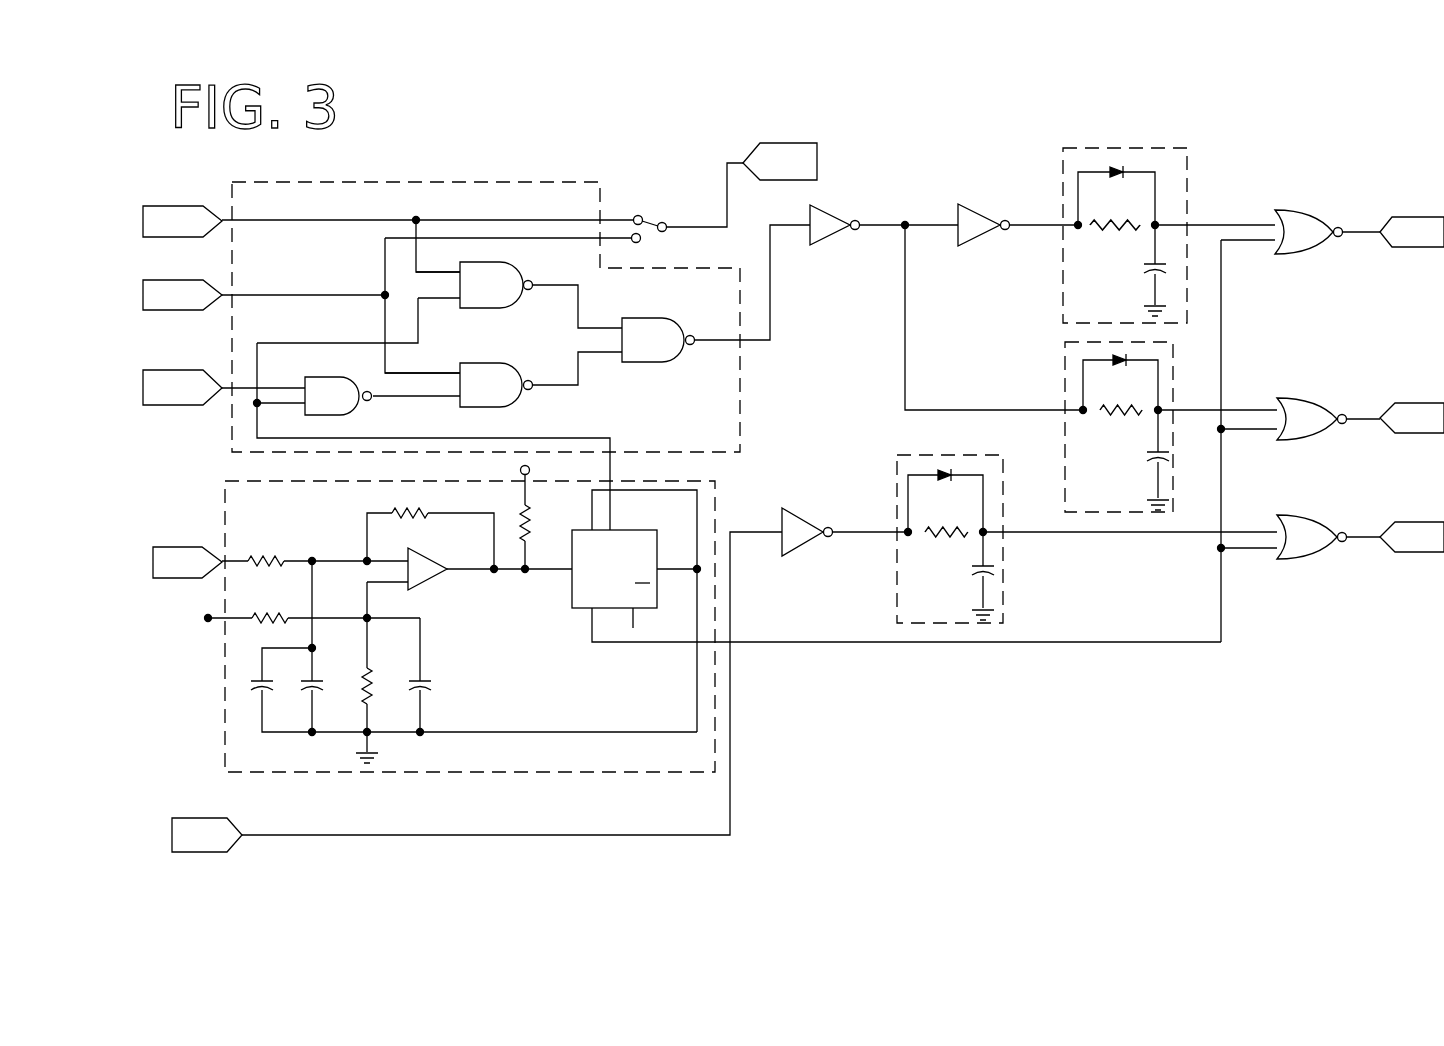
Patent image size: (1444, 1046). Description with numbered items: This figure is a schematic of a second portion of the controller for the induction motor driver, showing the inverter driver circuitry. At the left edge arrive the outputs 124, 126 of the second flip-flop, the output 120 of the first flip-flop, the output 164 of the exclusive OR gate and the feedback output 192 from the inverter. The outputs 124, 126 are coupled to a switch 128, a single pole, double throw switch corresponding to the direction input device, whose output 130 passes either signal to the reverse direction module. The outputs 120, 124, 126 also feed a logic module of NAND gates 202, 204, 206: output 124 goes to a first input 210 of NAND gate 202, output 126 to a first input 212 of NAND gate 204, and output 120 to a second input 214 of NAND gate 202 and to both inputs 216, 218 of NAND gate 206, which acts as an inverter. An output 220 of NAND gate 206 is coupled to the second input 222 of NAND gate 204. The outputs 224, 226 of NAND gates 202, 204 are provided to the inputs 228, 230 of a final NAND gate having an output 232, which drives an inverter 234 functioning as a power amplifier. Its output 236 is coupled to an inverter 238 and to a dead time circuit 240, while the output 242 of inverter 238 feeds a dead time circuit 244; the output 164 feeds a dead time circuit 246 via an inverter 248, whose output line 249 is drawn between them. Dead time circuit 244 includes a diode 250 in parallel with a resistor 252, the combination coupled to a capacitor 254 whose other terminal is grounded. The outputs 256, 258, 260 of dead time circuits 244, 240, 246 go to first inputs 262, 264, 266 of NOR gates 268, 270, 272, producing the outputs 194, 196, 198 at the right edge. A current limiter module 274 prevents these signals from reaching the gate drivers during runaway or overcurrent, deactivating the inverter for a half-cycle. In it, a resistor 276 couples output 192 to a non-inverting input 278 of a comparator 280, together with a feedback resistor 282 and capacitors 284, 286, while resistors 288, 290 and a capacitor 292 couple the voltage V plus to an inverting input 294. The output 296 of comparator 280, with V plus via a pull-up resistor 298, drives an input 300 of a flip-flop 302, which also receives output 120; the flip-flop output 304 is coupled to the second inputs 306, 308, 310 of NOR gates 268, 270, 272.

The output of the first flip-flop 120 is at (160, 375).
The output of the second flip-flop 124 is at (160, 205).
The output of the second flip-flop 126 is at (157, 290).
The switch 128 is at (642, 212).
The output of the switch 130 is at (682, 220).
The output of the exclusive OR gate 164 is at (222, 850).
The feedback output 192 is at (167, 548).
The output 194 is at (1405, 216).
The output 196 is at (1408, 402).
The output 198 is at (1398, 521).
The NAND gate 202 is at (503, 298).
The NAND gate 204 is at (512, 398).
The NAND gate 206 is at (355, 407).
The first input of NAND gate 202 210 is at (435, 270).
The first input of NAND gate 204 212 is at (427, 372).
The second input of NAND gate 202 214 is at (359, 320).
The input of NAND gate 206 216 is at (268, 385).
The input of NAND gate 206 218 is at (262, 408).
The output of NAND gate 206 220 is at (422, 397).
The second input of NAND gate 204 222 is at (455, 398).
The output of NAND gate 202 224 is at (547, 283).
The output of NAND gate 204 226 is at (550, 380).
The input of NAND gate 208 228 is at (597, 326).
The input of NAND gate 208 230 is at (610, 352).
The output of NAND gate 208 232 is at (703, 339).
The inverter 234 is at (835, 218).
The output of the inverter 234 236 is at (877, 235).
The inverter 238 is at (972, 215).
The dead time circuit 240 is at (1060, 423).
The output of the second inverter 242 is at (1028, 233).
The dead time circuit 244 is at (1148, 139).
The dead time circuit 246 is at (894, 465).
The inverter 248 is at (800, 540).
The output line 249 is at (862, 536).
The diode 250 is at (1118, 176).
The resistor 252 is at (1112, 232).
The capacitor 254 is at (1148, 270).
The output of dead time circuit 244 256 is at (1195, 222).
The output of dead time circuit 240 258 is at (1195, 420).
The output of dead time circuit 246 260 is at (1175, 532).
The first input of NOR gate 268 262 is at (1248, 220).
The first input of NOR gate 270 264 is at (1248, 408).
The first input of NOR gate 272 266 is at (1248, 530).
The NOR gate 268 is at (1298, 240).
The NOR gate 270 is at (1312, 420).
The NOR gate 272 is at (1312, 537).
The current limiter module 274 is at (222, 728).
The resistor 276 is at (276, 556).
The non-inverting input of the comparator 278 is at (397, 555).
The comparator 280 is at (440, 573).
The feedback resistor 282 is at (430, 514).
The capacitor 284 is at (272, 683).
The capacitor 286 is at (320, 683).
The resistor 288 is at (268, 614).
The resistor 290 is at (374, 680).
The capacitor 292 is at (427, 680).
The inverting input of the comparator 294 is at (378, 584).
The output of the comparator 296 is at (487, 573).
The pull-up resistor 298 is at (528, 530).
The input of the flip-flop 300 is at (558, 578).
The flip-flop 302 is at (650, 545).
The output of the flip-flop 304 is at (857, 645).
The second input of NOR gate 268 306 is at (1243, 250).
The second input of NOR gate 270 308 is at (1248, 432).
The second input of NOR gate 272 310 is at (1250, 551).